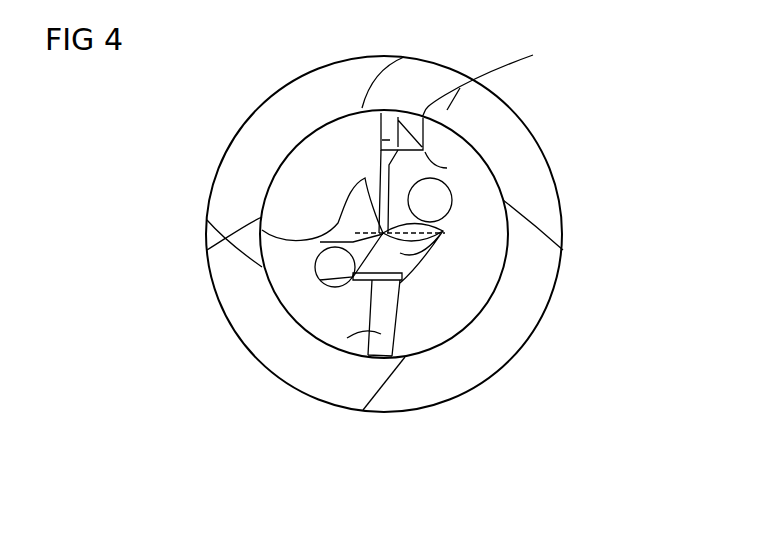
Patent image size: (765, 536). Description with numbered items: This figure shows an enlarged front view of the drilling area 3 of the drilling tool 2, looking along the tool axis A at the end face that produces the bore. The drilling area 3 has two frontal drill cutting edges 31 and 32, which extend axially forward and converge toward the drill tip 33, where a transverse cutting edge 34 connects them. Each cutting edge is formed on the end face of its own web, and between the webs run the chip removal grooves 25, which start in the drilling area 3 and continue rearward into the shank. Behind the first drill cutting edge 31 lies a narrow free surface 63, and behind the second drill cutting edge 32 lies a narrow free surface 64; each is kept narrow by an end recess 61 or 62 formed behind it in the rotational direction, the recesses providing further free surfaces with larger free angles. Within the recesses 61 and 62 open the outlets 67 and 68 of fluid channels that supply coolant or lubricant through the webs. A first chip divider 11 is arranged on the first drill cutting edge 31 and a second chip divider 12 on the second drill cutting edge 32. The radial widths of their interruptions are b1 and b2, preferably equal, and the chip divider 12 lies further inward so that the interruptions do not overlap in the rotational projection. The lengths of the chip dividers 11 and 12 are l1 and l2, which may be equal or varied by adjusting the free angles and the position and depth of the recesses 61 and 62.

The drilling tool 2 is at (637, 133).
The drilling area 3 is at (447, 152).
The first chip divider 11 is at (371, 157).
The second chip divider 12 is at (397, 340).
The chip removal grooves 25 is at (457, 308).
The first drill cutting edge 31 is at (368, 152).
The second drill cutting edge 32 is at (397, 350).
The drill tip 33 is at (328, 270).
The transverse cutting edge 34 is at (447, 168).
The first end recess 61 is at (493, 80).
The second end recess 62 is at (330, 308).
The first free surface 63 is at (460, 88).
The second free surface 64 is at (350, 337).
The first outlet 67 is at (430, 200).
The second outlet 68 is at (315, 267).
The tool axis A is at (443, 231).
The length of the first chip divider l1 is at (425, 155).
The length of the second chip divider l2 is at (352, 262).
The radial width of the first chip divider interruption b1 is at (440, 153).
The radial width of the second chip divider interruption b2 is at (355, 273).